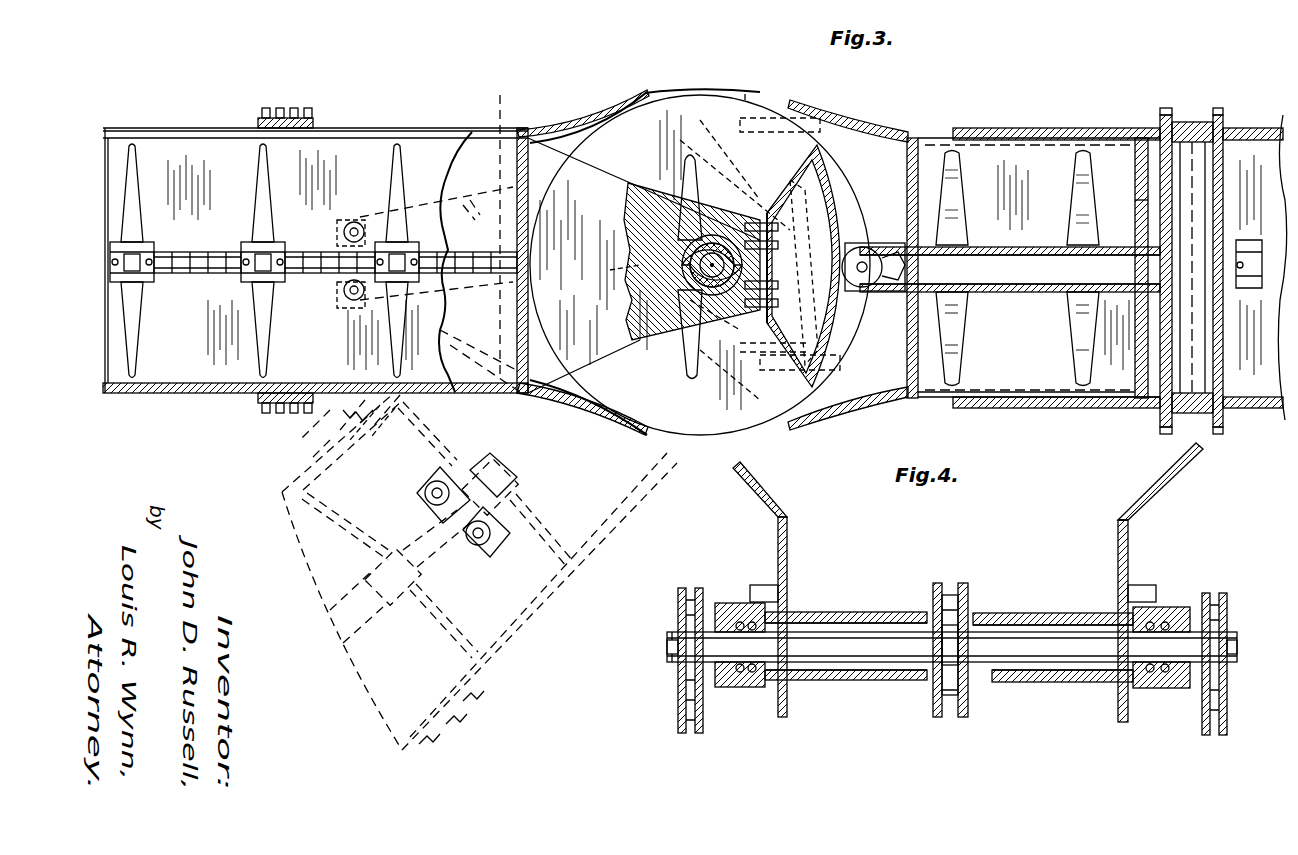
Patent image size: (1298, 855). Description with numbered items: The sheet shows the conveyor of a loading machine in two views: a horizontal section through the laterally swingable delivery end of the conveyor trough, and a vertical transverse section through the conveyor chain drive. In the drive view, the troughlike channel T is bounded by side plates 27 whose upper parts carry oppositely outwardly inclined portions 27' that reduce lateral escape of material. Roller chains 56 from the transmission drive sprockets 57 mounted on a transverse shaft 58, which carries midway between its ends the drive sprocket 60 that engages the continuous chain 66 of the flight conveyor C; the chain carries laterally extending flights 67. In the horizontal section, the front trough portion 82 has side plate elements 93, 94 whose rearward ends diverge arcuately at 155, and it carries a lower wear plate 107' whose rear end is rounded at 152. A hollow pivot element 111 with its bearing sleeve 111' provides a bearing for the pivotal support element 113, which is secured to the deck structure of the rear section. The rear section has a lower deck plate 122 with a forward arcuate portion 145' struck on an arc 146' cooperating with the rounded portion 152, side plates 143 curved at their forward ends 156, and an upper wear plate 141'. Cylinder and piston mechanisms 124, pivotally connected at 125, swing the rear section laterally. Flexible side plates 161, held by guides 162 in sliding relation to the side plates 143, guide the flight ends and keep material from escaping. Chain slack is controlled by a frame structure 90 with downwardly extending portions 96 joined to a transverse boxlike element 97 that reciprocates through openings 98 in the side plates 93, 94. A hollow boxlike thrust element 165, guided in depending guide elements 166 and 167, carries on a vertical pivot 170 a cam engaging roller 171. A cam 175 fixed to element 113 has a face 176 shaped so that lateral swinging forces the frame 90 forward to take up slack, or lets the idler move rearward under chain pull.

In FIG. 3, the flexible side plate 161 is at (410, 128).
In FIG. 3, the guide 162 is at (295, 118).
In FIG. 3, the wear plate 141' is at (158, 285).
In FIG. 3, the side plate 143 is at (470, 132).
In FIG. 3, the flight 67 is at (142, 190).
In FIG. 3, the flight conveyor C is at (228, 238).
In FIG. 4, the flight conveyor C is at (975, 560).
In FIG. 3, the continuous chain 66 is at (322, 252).
In FIG. 4, the continuous chain 66 is at (962, 717).
In FIG. 3, the cylinder and piston mechanism 124 is at (502, 140).
In FIG. 3, the lower deck plate 122 is at (460, 430).
In FIG. 3, the rounded portion 152 is at (712, 95).
In FIG. 3, the curved forward end 156 is at (600, 112).
In FIG. 3, the forward arcuate portion 145' is at (588, 260).
In FIG. 3, the arc 146' is at (700, 73).
In FIG. 3, the pivotal connection 125 is at (800, 100).
In FIG. 3, the arcuately diverging rearward end 155 is at (865, 125).
In FIG. 3, the cam 175 is at (845, 405).
In FIG. 3, the pivotal support element 113 is at (650, 165).
In FIG. 3, the hollow pivot element 111 is at (787, 249).
In FIG. 3, the bearing sleeve 111' is at (609, 267).
In FIG. 3, the cam face 176 is at (835, 180).
In FIG. 3, the vertical pivot 170 is at (845, 200).
In FIG. 3, the cam engaging roller 171 is at (910, 265).
In FIG. 3, the side plate element 93 is at (1095, 128).
In FIG. 3, the side plate element 94 is at (1075, 128).
In FIG. 3, the front trough portion 82 is at (1140, 128).
In FIG. 3, the transverse boxlike element 97 is at (1160, 375).
In FIG. 3, the depending guide element 167 is at (1135, 178).
In FIG. 3, the wear plate 107' is at (1026, 404).
In FIG. 3, the hollow boxlike element 165 is at (1040, 245).
In FIG. 3, the depending guide element 166 is at (1085, 330).
In FIG. 3, the downwardly extending portion 96 is at (1170, 115).
In FIG. 3, the frame structure 90 is at (1200, 122).
In FIG. 3, the opening 98 is at (1245, 128).
In FIG. 4, the transverse shaft 58 is at (873, 655).
In FIG. 4, the drive sprocket 60 is at (975, 610).
In FIG. 4, the sprocket 57 is at (675, 655).
In FIG. 4, the roller chain 56 is at (703, 720).
In FIG. 4, the side plate 27 is at (952, 619).
In FIG. 4, the outwardly inclined portion 27' is at (968, 481).
In FIG. 4, the troughlike channel T is at (1090, 535).